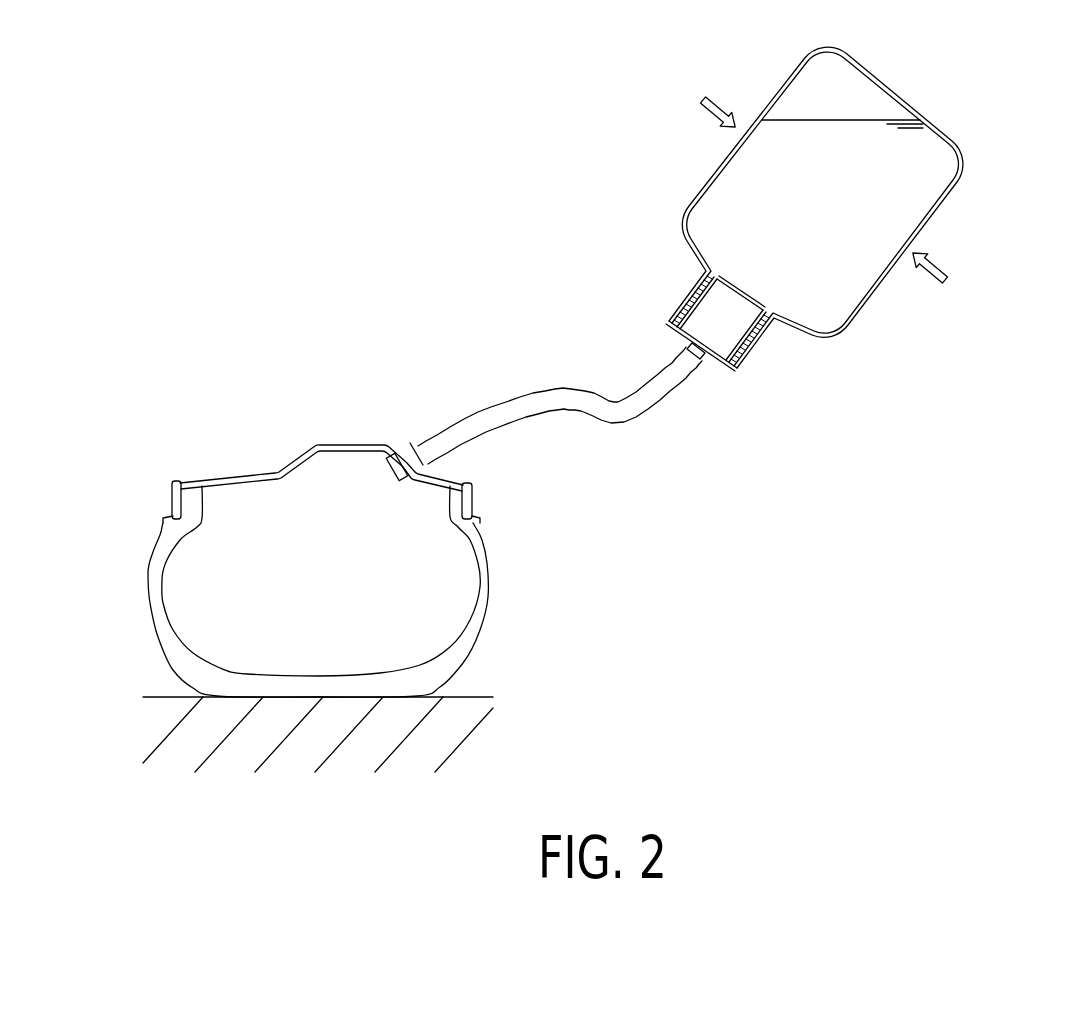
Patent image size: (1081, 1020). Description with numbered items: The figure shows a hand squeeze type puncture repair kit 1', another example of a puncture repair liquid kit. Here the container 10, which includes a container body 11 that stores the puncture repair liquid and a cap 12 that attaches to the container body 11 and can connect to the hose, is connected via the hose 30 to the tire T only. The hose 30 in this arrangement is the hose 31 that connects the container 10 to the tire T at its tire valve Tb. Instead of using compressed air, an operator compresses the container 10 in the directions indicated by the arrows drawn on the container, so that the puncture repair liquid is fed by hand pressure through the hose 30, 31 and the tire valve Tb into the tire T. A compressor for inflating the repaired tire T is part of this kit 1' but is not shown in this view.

The puncture repair kit 1' is at (739, 272).
The container 10 is at (863, 221).
The container body 11 is at (867, 297).
The cap 12 is at (752, 357).
The hose 30 is at (560, 422).
The hose 31 is at (583, 408).
The tire valve Tb is at (410, 443).
The tire T is at (503, 627).